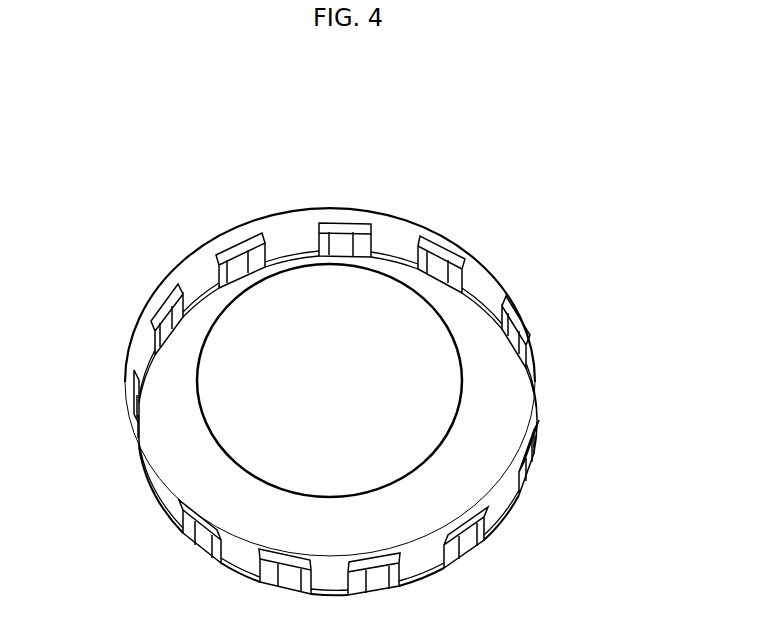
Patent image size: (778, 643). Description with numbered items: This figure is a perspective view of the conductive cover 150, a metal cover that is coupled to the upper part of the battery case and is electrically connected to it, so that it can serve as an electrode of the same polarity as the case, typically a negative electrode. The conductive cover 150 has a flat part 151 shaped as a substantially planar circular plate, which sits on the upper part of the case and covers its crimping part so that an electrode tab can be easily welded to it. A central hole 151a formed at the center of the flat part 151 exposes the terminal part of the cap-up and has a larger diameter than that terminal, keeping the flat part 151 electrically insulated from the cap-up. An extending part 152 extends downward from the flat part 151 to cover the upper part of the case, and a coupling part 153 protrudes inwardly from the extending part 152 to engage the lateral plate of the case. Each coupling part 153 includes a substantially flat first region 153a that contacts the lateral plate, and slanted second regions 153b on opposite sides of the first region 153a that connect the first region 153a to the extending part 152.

The conductive cover 150 is at (106, 98).
The flat part 151 is at (487, 368).
The central hole 151a is at (462, 380).
The extending part 152 is at (494, 297).
The coupling part 153 is at (429, 132).
The first region 153a is at (341, 238).
The second region 153b is at (318, 223).